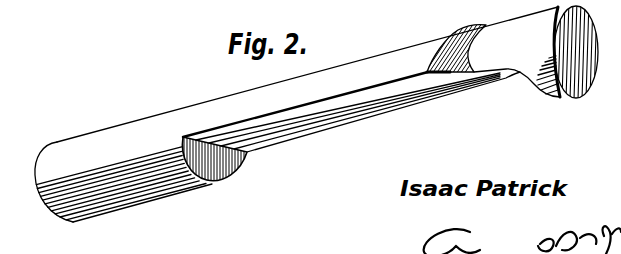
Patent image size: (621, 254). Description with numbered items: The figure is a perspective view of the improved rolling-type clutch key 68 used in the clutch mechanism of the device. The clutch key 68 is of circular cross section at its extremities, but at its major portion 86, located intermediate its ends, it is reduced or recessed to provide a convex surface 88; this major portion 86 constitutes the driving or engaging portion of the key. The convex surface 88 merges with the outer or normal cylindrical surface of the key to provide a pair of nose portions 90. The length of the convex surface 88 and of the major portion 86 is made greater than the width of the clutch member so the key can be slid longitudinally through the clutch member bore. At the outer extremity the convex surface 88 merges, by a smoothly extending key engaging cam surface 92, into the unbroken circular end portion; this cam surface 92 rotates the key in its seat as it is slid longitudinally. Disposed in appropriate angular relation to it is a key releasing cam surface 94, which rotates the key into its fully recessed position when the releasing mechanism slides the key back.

The clutch key 68 is at (157, 127).
The major portion 86 is at (327, 70).
The convex surface 88 is at (350, 105).
The nose portions 90 is at (397, 82).
The key engaging cam surface 92 is at (533, 83).
The key releasing cam surface 94 is at (465, 53).